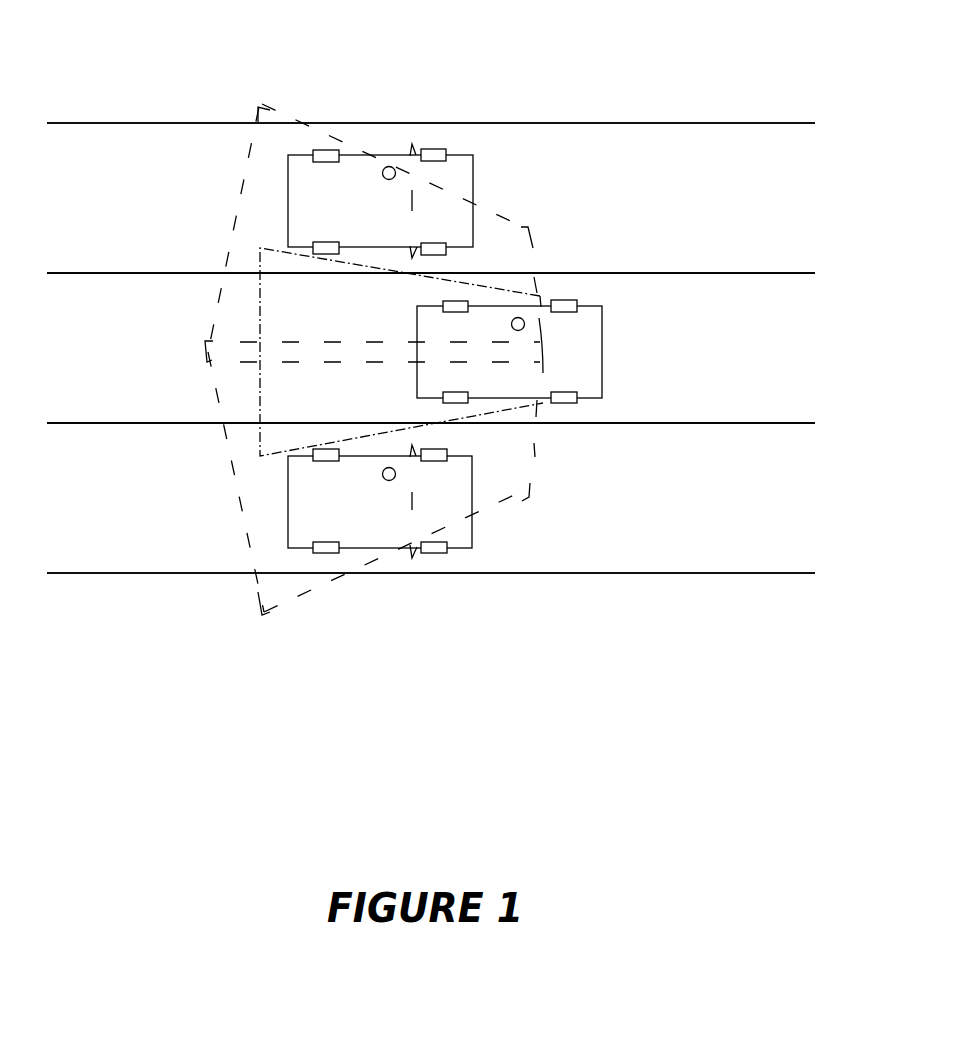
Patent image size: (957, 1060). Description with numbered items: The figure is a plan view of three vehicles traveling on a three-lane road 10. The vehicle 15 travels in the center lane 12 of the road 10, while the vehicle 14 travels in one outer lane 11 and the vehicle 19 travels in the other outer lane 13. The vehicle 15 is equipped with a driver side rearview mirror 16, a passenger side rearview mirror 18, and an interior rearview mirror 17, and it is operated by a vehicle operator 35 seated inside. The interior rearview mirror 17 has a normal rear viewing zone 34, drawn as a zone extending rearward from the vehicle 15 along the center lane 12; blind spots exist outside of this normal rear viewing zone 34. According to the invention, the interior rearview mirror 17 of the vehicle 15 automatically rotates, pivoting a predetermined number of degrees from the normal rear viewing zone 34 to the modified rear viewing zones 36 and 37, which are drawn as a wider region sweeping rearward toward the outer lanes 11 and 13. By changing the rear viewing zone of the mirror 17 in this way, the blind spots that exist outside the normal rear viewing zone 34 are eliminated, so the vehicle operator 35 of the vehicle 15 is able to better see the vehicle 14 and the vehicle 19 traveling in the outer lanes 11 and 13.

The three-lane road 10 is at (613, 122).
The outer lane 11 is at (750, 193).
The center lane 12 is at (750, 342).
The outer lane 13 is at (750, 493).
The vehicle 14 is at (384, 166).
The vehicle 15 is at (603, 352).
The driver side rearview mirror 16 is at (540, 297).
The interior rearview mirror 17 is at (543, 352).
The passenger side rearview mirror 18 is at (547, 400).
The vehicle 19 is at (370, 548).
The normal rear viewing zone 34 is at (260, 353).
The vehicle operator 35 is at (513, 322).
The modified rear viewing zone 36 is at (252, 148).
The modified rear viewing zone 37 is at (258, 592).